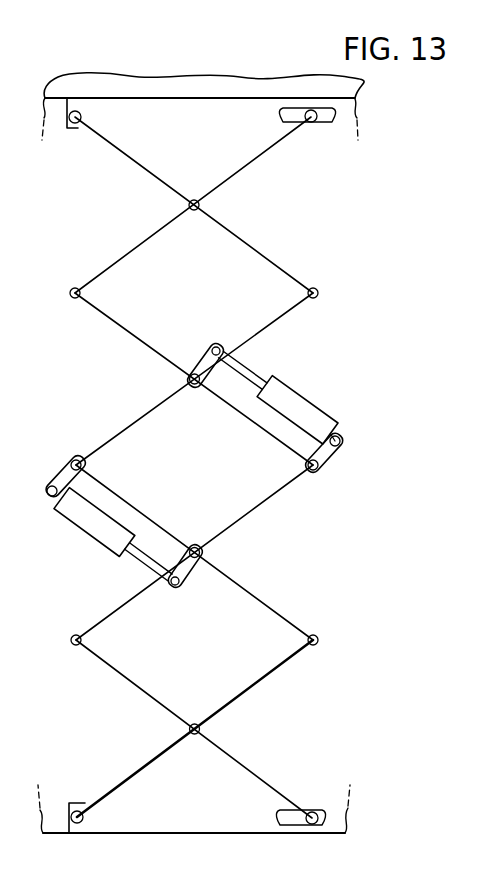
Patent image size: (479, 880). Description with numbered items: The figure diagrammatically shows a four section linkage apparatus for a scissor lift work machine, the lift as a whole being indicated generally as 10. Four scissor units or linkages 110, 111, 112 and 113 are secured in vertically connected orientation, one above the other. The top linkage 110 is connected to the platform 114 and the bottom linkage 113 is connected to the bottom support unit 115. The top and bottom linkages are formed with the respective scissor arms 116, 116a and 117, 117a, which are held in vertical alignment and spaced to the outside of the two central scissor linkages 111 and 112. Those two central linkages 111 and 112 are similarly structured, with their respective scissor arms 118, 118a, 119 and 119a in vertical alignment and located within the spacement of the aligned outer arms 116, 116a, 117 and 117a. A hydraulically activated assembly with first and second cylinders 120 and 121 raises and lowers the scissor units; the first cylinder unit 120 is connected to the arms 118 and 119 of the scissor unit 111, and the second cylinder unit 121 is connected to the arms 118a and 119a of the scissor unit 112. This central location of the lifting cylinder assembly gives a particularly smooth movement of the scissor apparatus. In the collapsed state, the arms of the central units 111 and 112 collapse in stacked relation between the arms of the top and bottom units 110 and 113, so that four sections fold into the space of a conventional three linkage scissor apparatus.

The scissor lift 10 is at (254, 467).
The scissor unit 110 is at (194, 207).
The scissor unit 111 is at (209, 354).
The scissor unit 112 is at (187, 544).
The scissor unit 113 is at (201, 693).
The platform 114 is at (297, 72).
The bottom support unit 115 is at (193, 834).
The scissor arm 116 is at (143, 245).
The scissor arm 116a is at (235, 178).
The scissor arm 117 is at (158, 702).
The scissor arm 117a is at (323, 588).
The scissor arm 118 is at (148, 343).
The scissor arm 118a is at (287, 273).
The scissor arm 119 is at (140, 512).
The scissor arm 119a is at (276, 490).
The first cylinder unit 120 is at (89, 547).
The second cylinder unit 121 is at (323, 406).